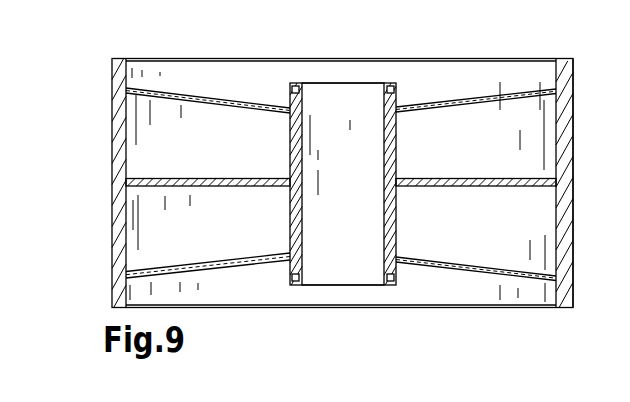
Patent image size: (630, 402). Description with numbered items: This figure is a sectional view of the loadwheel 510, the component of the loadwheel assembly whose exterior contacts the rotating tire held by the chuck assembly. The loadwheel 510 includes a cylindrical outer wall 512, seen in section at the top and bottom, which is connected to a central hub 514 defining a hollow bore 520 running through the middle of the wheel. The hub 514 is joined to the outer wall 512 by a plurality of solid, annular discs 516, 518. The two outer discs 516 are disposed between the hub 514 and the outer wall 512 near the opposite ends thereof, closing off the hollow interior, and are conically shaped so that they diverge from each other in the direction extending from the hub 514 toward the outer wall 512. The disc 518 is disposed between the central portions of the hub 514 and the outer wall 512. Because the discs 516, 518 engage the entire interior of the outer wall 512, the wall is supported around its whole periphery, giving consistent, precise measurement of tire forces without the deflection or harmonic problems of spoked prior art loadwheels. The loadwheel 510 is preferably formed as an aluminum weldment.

The loadwheel 510 is at (168, 43).
The cylindrical outer wall 512 is at (573, 72).
The hub 514 is at (390, 90).
The outer discs 516 is at (435, 98).
The central disc 518 is at (175, 184).
The hollow bore 520 is at (338, 125).